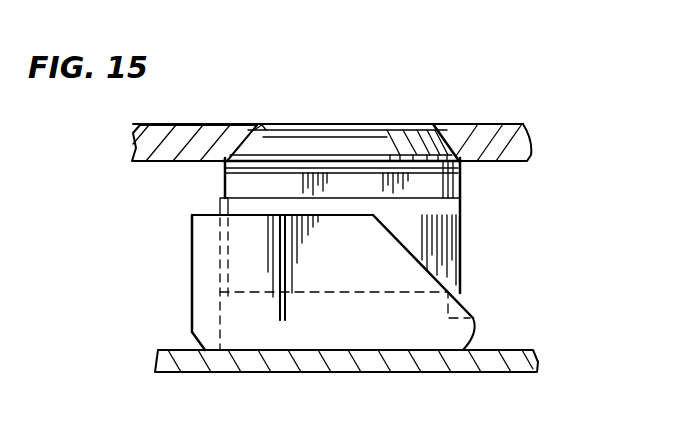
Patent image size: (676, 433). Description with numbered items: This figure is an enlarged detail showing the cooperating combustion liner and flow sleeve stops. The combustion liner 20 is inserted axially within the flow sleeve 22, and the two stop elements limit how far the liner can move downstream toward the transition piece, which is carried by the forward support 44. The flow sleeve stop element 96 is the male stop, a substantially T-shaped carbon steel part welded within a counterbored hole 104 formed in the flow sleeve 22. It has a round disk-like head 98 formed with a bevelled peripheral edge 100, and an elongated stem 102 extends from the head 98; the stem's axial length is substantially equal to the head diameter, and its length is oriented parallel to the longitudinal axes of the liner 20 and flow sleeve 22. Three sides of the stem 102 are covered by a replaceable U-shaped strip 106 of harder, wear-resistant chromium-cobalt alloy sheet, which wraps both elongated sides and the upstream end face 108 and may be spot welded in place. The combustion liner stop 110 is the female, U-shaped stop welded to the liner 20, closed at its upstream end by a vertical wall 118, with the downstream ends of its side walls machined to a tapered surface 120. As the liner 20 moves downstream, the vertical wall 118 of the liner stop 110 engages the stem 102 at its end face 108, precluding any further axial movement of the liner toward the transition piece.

The combustion liner 20 is at (530, 370).
The flow sleeve 22 is at (503, 124).
The forward support 44 is at (310, 335).
The flow sleeve stop element 96 is at (470, 220).
The head 98 is at (397, 136).
The bevelled peripheral edge 100 is at (324, 148).
The elongated stem 102 is at (461, 183).
The counterbored hole 104 is at (262, 127).
The U-shaped strip 106 is at (219, 208).
The upstream end face 108 is at (224, 180).
The combustion liner stop 110 is at (181, 300).
The vertical wall 118 is at (191, 255).
The tapered surface 120 is at (412, 253).